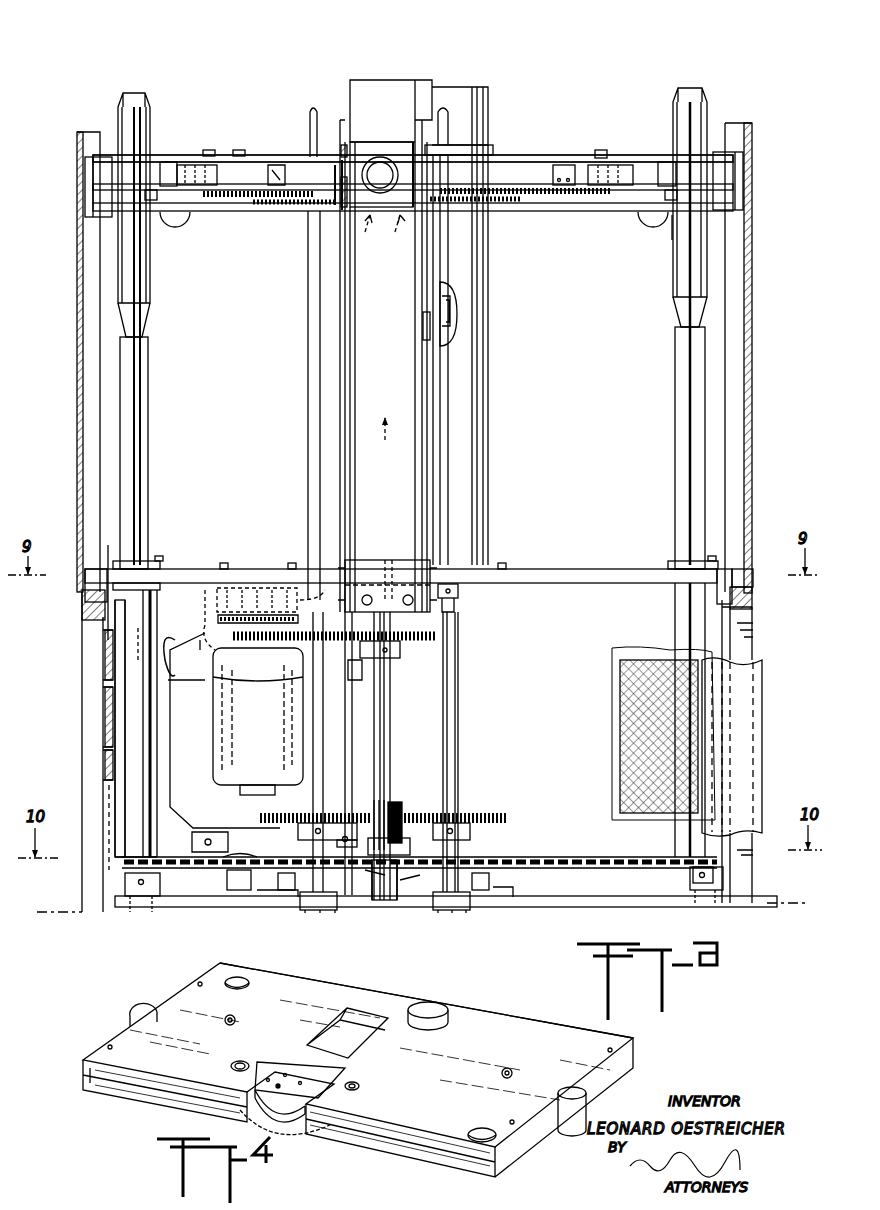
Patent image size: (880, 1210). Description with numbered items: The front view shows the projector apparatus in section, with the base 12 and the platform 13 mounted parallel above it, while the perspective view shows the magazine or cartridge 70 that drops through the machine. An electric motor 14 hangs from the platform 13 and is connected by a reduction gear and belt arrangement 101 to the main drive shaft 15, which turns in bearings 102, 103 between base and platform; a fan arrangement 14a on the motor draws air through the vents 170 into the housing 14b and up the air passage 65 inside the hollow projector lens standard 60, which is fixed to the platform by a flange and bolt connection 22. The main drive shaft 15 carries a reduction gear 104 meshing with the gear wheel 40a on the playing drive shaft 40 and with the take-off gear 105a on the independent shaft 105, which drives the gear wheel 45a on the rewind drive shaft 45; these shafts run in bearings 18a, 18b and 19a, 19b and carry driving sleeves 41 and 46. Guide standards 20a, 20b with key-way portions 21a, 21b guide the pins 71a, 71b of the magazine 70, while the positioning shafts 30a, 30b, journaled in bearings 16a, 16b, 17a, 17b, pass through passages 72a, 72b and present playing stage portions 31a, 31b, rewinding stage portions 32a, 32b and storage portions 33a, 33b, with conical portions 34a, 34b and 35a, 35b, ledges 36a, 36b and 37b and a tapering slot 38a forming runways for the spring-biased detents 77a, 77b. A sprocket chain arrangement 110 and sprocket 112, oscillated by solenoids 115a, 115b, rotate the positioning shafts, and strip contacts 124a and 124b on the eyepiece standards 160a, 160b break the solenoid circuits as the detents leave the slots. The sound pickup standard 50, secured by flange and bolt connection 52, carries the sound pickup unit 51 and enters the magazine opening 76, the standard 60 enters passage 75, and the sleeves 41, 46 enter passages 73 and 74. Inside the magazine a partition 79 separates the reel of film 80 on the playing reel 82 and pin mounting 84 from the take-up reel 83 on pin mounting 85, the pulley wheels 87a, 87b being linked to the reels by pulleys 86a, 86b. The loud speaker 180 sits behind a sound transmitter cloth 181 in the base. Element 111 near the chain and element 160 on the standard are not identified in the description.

In FIG. 3, the base 12 is at (648, 907).
In FIG. 3, the platform 13 is at (548, 569).
In FIG. 3, the electric motor 14 is at (270, 741).
In FIG. 3, the fan arrangement 14a is at (266, 586).
In FIG. 3, the housing 14b is at (205, 620).
In FIG. 3, the main drive shaft 15 is at (390, 724).
In FIG. 3, the bearing 16a is at (715, 905).
In FIG. 3, the bearing 16b is at (130, 905).
In FIG. 3, the bearing 17a is at (728, 560).
In FIG. 3, the bearing 17b is at (160, 563).
In FIG. 3, the bearing 18a is at (455, 912).
In FIG. 3, the bearing 18b is at (332, 912).
In FIG. 3, the bearing 19a is at (470, 586).
In FIG. 3, the bearing 19b is at (312, 570).
In FIG. 3, the guide standard 20a is at (752, 598).
In FIG. 3, the guide standard 20b is at (85, 600).
In FIG. 3, the key-way portion 21a is at (752, 572).
In FIG. 3, the key-way portion 21b is at (90, 585).
In FIG. 3, the flange and bolt connection 22 is at (345, 560).
In FIG. 3, the vertical positioning shaft 30a is at (680, 425).
In FIG. 3, the vertical positioning shaft 30b is at (148, 414).
In FIG. 3, the playing stage portion 31a is at (716, 197).
In FIG. 3, the playing stage portion 31b is at (110, 201).
In FIG. 3, the rewinding stage portion 32a is at (712, 327).
In FIG. 3, the rewinding stage portion 32b is at (114, 340).
In FIG. 3, the storage portion 33a is at (720, 560).
In FIG. 3, the storage portion 33b is at (113, 565).
In FIG. 3, the conical portion 34a is at (672, 162).
In FIG. 3, the conical portion 34b is at (192, 163).
In FIG. 3, the conical portion 35a is at (673, 312).
In FIG. 3, the conical portion 35b is at (148, 315).
In FIG. 3, the flange or ledge portion 36a is at (654, 226).
In FIG. 3, the flange or ledge portion 36b is at (163, 218).
In FIG. 3, the flange or ledge portion 37b is at (150, 337).
In FIG. 3, the tapering vertical slot 38a is at (672, 232).
In FIG. 3, the playing drive shaft 40 is at (316, 466).
In FIG. 3, the gear wheel 40a is at (272, 808).
In FIG. 3, the driving sleeve 41 is at (300, 162).
In FIG. 3, the rewind drive shaft 45 is at (450, 410).
In FIG. 3, the gear wheel 45a is at (492, 816).
In FIG. 3, the driving sleeve 46 is at (464, 304).
In FIG. 3, the sound pickup standard 50 is at (490, 445).
In FIG. 3, the sound pickup unit 51 is at (499, 146).
In FIG. 3, the flange and bolt connection 52 is at (504, 562).
In FIG. 3, the projector lens standard 60 is at (346, 97).
In FIG. 3, the air passage or conduit 65 is at (396, 469).
In FIG. 3, the magazine or cartridge 70 is at (524, 150).
In FIG. 4, the magazine or cartridge 70 is at (640, 1038).
In FIG. 3, the guide pin 71a is at (742, 166).
In FIG. 4, the guide pin 71a is at (568, 1090).
In FIG. 3, the guide pin 71b is at (90, 166).
In FIG. 4, the guide pin 71b is at (163, 1008).
In FIG. 4, the passage 72a is at (474, 1130).
In FIG. 4, the passage 72b is at (240, 987).
In FIG. 4, the passage 73 is at (236, 1069).
In FIG. 4, the passage 74 is at (359, 1088).
In FIG. 4, the passage 75 is at (352, 1010).
In FIG. 4, the opening 76 is at (440, 1025).
In FIG. 3, the spring-biased detent 77a is at (668, 196).
In FIG. 3, the spring-biased detent 77b is at (158, 196).
In FIG. 3, the partition 79 is at (186, 176).
In FIG. 3, the reel of film 80 is at (283, 165).
In FIG. 3, the playing reel 82 is at (210, 157).
In FIG. 3, the take-up reel 83 is at (575, 163).
In FIG. 3, the playing reel pin mounting 84 is at (238, 144).
In FIG. 3, the take-up reel pin mounting 85 is at (596, 158).
In FIG. 3, the pulley 86a is at (523, 205).
In FIG. 3, the pulley drive arrangement 86b is at (245, 208).
In FIG. 3, the pulley wheel 87a is at (463, 203).
In FIG. 3, the pulley drive wheel 87b is at (300, 205).
In FIG. 3, the reduction gear and belt arrangement 101 is at (415, 645).
In FIG. 3, the bearing 102 is at (397, 905).
In FIG. 3, the bearing 103 is at (393, 565).
In FIG. 3, the reduction gear 104 is at (362, 818).
In FIG. 3, the independent shaft 105 is at (398, 800).
In FIG. 3, the take off gear 105a is at (410, 812).
In FIG. 3, the sprocket chain arrangement 110 is at (538, 858).
In FIG. 3, the sprocket 111 is at (236, 855).
In FIG. 3, the toothed sprocket 112 is at (365, 870).
In FIG. 3, the solenoid 115a is at (485, 905).
In FIG. 3, the solenoid 115b is at (290, 905).
In FIG. 3, the vertical strip contacts 124a is at (420, 330).
In FIG. 3, the vertical strip contacts 124b is at (315, 212).
In FIG. 3, the indicator 160 is at (381, 174).
In FIG. 3, the eyepiece standard 160a is at (425, 270).
In FIG. 3, the eyepiece standard 160b is at (348, 292).
In FIG. 3, the vents 170 is at (137, 644).
In FIG. 3, the loud speaker 180 is at (614, 750).
In FIG. 3, the sound transmitter cloth 181 is at (690, 765).